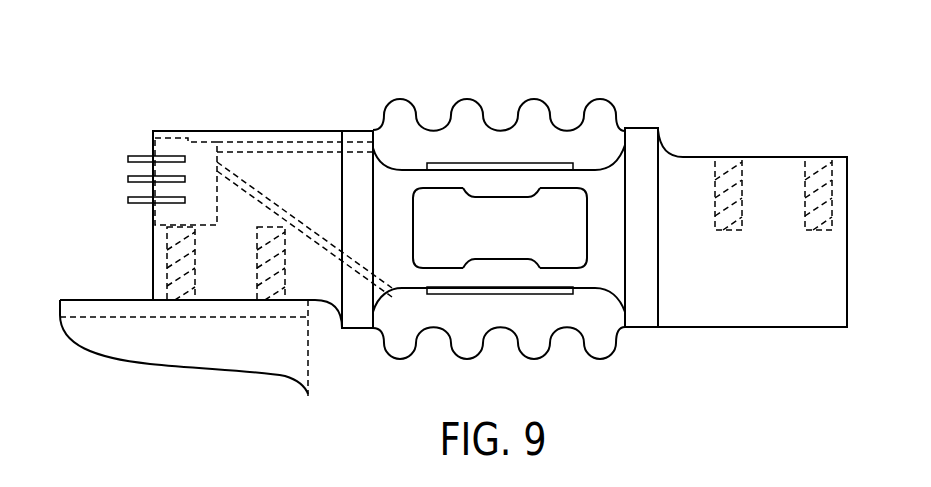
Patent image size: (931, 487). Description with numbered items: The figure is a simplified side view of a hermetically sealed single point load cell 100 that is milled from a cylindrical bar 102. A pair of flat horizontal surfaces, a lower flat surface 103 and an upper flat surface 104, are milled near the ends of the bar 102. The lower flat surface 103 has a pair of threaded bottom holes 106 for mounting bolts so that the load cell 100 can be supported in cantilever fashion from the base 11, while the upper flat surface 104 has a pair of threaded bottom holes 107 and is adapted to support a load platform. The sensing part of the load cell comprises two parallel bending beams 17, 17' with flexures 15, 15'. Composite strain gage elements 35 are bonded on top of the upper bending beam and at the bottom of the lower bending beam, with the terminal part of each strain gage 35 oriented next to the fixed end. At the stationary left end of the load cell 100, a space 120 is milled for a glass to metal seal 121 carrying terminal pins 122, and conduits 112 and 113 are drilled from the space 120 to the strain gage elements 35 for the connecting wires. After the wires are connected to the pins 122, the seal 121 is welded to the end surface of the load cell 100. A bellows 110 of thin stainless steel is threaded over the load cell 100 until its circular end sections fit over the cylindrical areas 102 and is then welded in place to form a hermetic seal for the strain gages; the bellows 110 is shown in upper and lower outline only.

The load cell 100 is at (690, 99).
The cylindrical bar 102 is at (357, 318).
The lower flat surface 103 is at (222, 302).
The upper flat surface 104 is at (775, 157).
The threaded bottom holes 106 is at (178, 302).
The threaded bottom holes 107 is at (726, 230).
The bellows 110 is at (600, 95).
The conduit 112 is at (288, 140).
The conduit 113 is at (285, 224).
The space 120 is at (178, 131).
The glass to metal seal 121 is at (146, 214).
The terminal pins 122 is at (121, 157).
The base 11 is at (78, 312).
The composite strain gage elements 35 is at (478, 160).
The flexure 15 is at (500, 210).
The flexure 15' is at (500, 244).
The bending beam 17 is at (501, 209).
The bending beam 17' is at (501, 244).